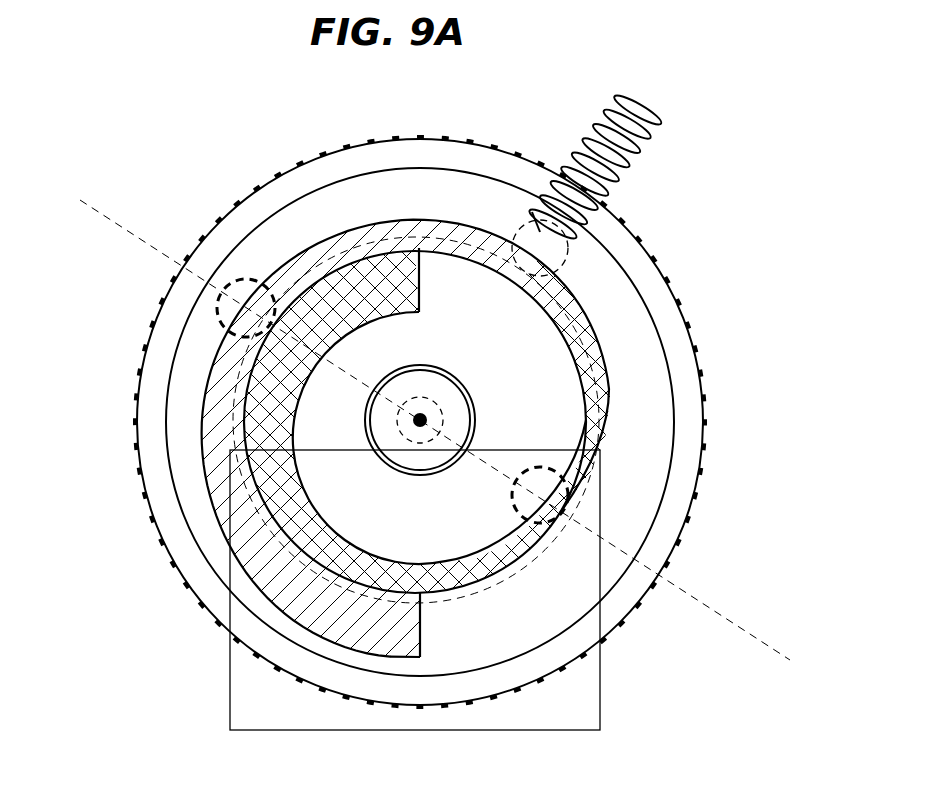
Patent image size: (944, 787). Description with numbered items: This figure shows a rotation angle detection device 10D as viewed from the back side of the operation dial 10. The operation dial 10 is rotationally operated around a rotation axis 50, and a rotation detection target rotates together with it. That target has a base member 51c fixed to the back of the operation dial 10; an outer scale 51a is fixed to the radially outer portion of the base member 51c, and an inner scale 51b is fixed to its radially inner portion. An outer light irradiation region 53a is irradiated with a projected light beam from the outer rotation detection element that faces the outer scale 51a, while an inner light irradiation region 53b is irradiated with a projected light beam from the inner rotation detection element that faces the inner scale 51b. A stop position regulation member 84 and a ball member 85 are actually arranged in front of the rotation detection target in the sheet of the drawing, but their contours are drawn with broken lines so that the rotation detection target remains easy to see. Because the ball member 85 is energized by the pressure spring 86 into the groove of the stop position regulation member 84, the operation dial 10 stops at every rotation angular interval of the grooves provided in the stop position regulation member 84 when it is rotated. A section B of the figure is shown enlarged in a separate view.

The operation dial 10 is at (608, 275).
The rotation angle detection device 10D is at (757, 290).
The rotation axis 50 is at (424, 419).
The outer scale 51a is at (293, 258).
The inner scale 51b is at (323, 293).
The base member 51c is at (333, 198).
The outer light irradiation region 53a is at (222, 318).
The inner light irradiation region 53b is at (566, 488).
The stop position regulation member 84 is at (397, 227).
The ball member 85 is at (508, 215).
The pressure spring 86 is at (640, 152).
The section B is at (600, 702).